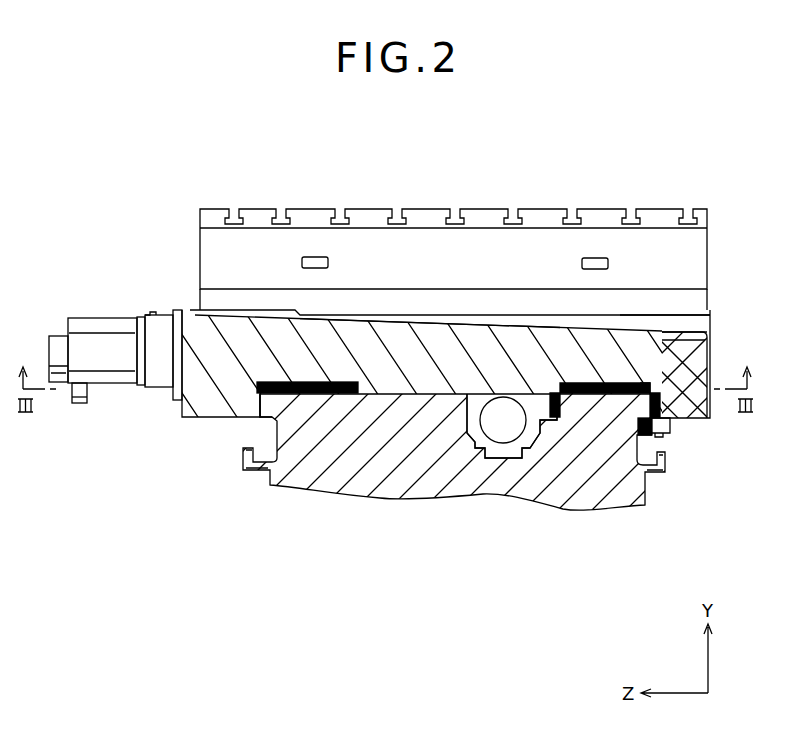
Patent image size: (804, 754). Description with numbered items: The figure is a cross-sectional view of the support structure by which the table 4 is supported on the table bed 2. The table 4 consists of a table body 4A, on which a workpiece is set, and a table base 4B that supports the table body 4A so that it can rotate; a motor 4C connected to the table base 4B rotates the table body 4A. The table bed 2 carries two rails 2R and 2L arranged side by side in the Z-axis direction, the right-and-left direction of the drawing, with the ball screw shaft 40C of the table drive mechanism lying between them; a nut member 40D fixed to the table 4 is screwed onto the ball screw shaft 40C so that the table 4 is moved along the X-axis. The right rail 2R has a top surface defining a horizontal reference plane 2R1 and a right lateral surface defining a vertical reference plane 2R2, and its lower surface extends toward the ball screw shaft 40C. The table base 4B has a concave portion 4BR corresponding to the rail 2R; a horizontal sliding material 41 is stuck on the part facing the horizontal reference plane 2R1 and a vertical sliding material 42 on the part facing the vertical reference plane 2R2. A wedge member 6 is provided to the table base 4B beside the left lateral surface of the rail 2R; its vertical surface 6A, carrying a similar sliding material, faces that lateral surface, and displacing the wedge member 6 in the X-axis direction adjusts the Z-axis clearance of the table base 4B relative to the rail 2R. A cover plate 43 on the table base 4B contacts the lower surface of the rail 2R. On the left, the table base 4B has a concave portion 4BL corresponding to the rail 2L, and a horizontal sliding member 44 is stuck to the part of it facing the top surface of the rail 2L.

The table bed 2 is at (630, 504).
The rail 2L is at (336, 394).
The rail 2R is at (588, 402).
The horizontal reference plane 2R1 is at (618, 314).
The vertical reference plane 2R2 is at (655, 395).
The table 4 is at (143, 211).
The table body 4A is at (202, 238).
The table base 4B is at (197, 328).
The concave portion 4BL is at (335, 312).
The concave portion 4BR is at (641, 313).
The motor 4C is at (113, 358).
The wedge member 6 is at (529, 314).
The vertical surface 6A is at (561, 316).
The ball screw shaft 40C is at (500, 445).
The nut member 40D is at (475, 406).
The horizontal sliding material 41 is at (665, 335).
The vertical sliding material 42 is at (675, 418).
The cover plate 43 is at (642, 442).
The horizontal sliding member 44 is at (305, 396).